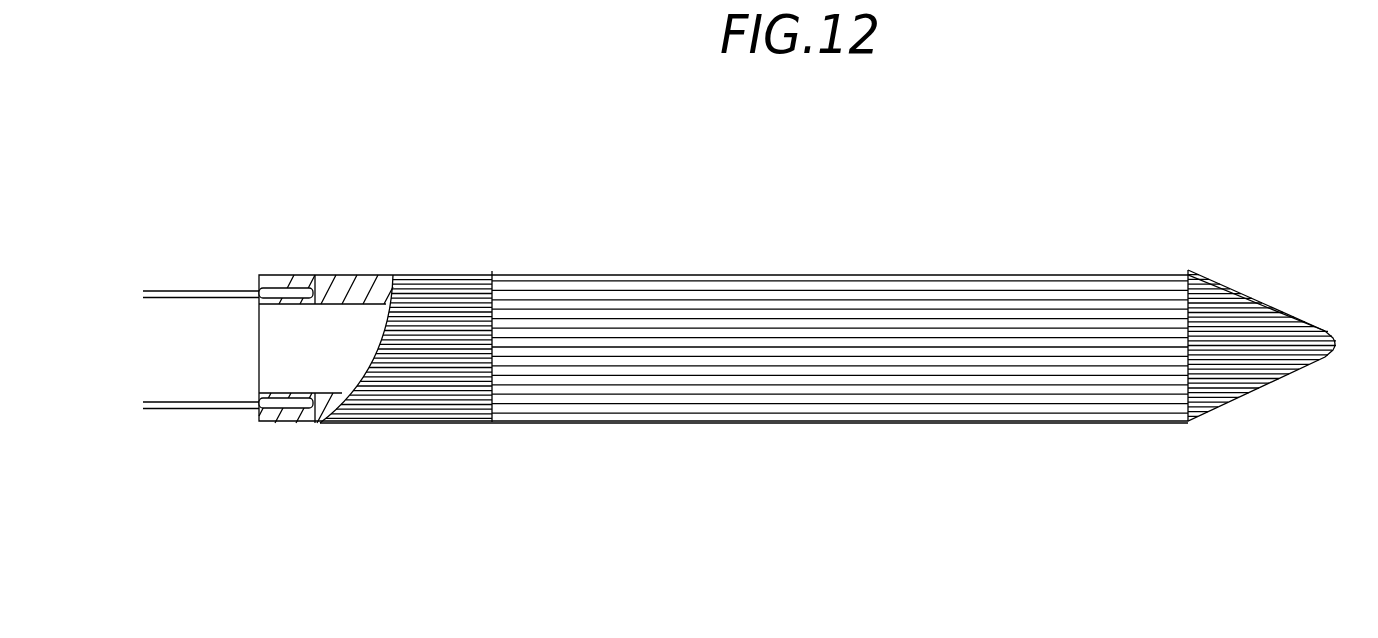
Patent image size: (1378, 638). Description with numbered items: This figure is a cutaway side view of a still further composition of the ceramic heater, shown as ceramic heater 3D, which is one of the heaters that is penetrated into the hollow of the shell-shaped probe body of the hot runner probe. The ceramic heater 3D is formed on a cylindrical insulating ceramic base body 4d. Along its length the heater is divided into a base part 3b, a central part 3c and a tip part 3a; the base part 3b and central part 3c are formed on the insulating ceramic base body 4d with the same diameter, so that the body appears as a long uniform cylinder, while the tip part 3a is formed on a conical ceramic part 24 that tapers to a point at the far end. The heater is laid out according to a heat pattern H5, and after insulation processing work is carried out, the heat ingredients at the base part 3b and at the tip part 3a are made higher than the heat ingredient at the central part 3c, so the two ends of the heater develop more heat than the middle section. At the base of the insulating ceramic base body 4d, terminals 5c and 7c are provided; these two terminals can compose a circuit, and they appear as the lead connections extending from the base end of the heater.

The ceramic heater 3D is at (1245, 288).
The base part 3b is at (433, 280).
The central part 3c is at (740, 280).
The insulating ceramic base body 4d is at (960, 298).
The tip part 3a is at (1267, 378).
The conical ceramic part 24 is at (1282, 318).
The terminal 5c is at (284, 312).
The terminal 7c is at (294, 410).
The heat pattern H5 is at (448, 405).